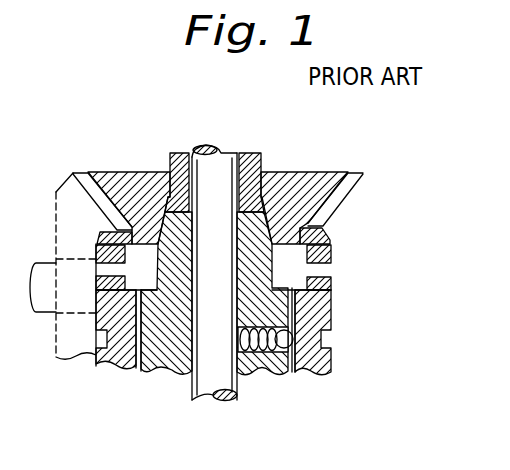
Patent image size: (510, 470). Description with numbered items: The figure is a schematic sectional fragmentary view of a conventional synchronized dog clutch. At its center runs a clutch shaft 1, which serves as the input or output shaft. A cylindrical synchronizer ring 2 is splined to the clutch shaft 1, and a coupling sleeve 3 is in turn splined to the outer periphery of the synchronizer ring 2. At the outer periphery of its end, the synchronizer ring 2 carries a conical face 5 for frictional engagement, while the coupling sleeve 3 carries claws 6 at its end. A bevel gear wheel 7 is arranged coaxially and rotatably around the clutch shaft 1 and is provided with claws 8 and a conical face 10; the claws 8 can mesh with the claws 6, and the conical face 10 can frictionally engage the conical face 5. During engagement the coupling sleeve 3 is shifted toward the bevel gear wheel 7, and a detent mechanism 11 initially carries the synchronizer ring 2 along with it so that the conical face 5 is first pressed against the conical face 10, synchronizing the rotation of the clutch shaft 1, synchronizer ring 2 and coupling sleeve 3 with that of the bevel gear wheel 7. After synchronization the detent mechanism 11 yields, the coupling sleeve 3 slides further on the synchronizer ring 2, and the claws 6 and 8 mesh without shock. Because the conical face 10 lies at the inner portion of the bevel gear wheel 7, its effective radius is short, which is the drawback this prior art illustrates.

The clutch shaft 1 is at (222, 147).
The synchronizer ring 2 is at (256, 298).
The coupling sleeve 3 is at (322, 314).
The conical face 5 is at (266, 226).
The claws 6 is at (325, 284).
The bevel gear wheel 7 is at (137, 171).
The claws 8 is at (322, 253).
The conical face 10 is at (262, 233).
The detent mechanism 11 is at (296, 351).